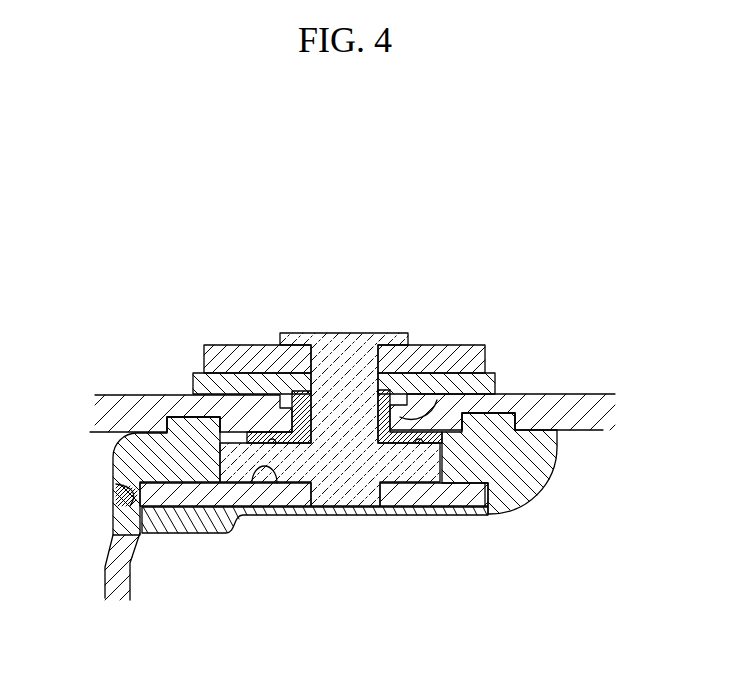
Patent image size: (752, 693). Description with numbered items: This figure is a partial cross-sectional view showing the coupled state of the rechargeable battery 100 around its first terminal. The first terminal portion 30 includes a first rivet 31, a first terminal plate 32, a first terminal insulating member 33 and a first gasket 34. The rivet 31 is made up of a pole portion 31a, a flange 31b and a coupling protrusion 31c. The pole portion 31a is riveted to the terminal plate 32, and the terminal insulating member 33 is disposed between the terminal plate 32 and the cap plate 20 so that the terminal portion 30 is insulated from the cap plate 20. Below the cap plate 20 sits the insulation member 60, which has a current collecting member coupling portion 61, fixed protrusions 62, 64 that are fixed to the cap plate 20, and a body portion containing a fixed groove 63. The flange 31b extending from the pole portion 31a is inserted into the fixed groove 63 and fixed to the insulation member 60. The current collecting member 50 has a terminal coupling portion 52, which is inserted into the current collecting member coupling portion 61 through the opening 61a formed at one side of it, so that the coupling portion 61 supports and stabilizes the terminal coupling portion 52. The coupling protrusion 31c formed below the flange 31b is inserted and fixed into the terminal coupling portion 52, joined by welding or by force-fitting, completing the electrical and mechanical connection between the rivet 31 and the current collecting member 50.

The rechargeable battery 100 is at (357, 192).
The cap plate 20 is at (597, 388).
The first terminal portion 30 is at (368, 435).
The first rivet 31 is at (330, 472).
The first pole portion 31a is at (343, 402).
The first flange 31b is at (409, 510).
The first coupling protrusion 31c is at (360, 497).
The first terminal plate 32 is at (460, 352).
The first terminal insulating member 33 is at (485, 384).
The first gasket 34 is at (410, 404).
The current collecting member 50 is at (98, 568).
The terminal coupling portion 52 is at (193, 498).
The insulation member 60 is at (511, 447).
The current collecting member coupling portion 61 is at (132, 436).
The opening 61a is at (120, 487).
The fixed protrusion 62 is at (182, 428).
The fixed groove 63 is at (254, 487).
The fixed protrusion 64 is at (508, 414).